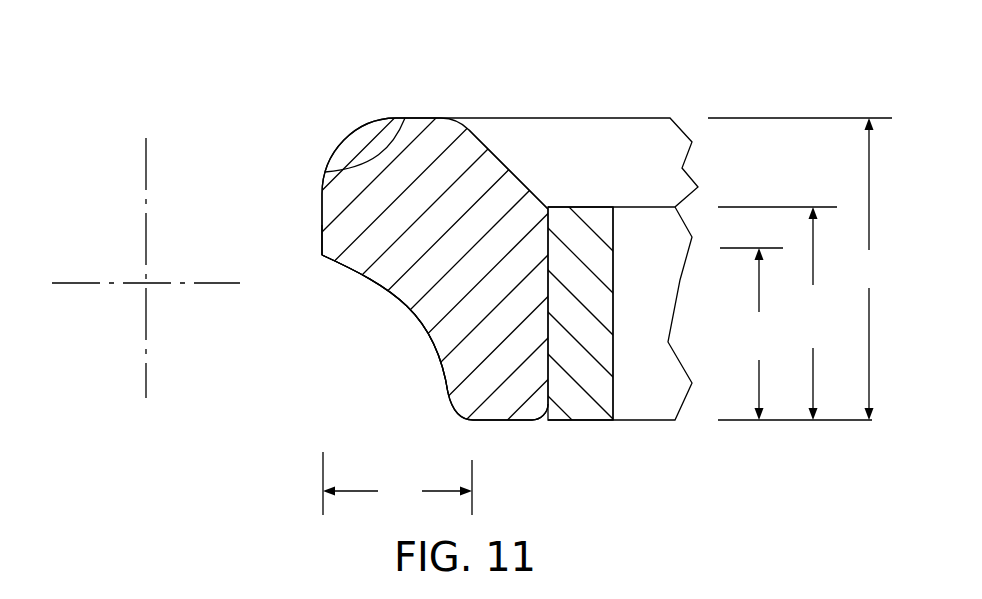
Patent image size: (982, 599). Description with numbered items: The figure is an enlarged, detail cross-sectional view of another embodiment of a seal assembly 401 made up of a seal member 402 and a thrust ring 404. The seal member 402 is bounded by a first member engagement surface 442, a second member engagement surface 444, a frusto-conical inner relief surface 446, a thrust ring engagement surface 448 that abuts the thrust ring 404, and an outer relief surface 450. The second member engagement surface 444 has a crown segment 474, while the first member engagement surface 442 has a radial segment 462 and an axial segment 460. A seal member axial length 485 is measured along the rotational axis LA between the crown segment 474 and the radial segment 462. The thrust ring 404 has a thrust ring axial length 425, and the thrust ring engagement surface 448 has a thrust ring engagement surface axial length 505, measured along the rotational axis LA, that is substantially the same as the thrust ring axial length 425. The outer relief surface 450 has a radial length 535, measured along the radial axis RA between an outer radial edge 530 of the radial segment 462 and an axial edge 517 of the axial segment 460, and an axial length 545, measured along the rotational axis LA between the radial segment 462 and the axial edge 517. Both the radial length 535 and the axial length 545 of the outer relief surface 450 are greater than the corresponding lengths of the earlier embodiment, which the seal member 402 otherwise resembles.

The seal assembly 401 is at (497, 268).
The seal member 402 is at (338, 231).
The thrust ring 404 is at (567, 279).
The first member engagement surface 442 is at (312, 211).
The second member engagement surface 444 is at (351, 126).
The frusto-conical inner relief surface 446 is at (515, 161).
The thrust ring engagement surface 448 is at (558, 300).
The outer relief surface 450 is at (403, 317).
The axial segment 460 is at (326, 237).
The radial segment 462 is at (517, 422).
The crown segment 474 is at (342, 166).
The seal member axial length 485 is at (800, 269).
The thrust ring axial length 425 is at (781, 313).
The thrust ring engagement surface axial length 505 is at (778, 313).
The axial length 545 is at (751, 334).
The radial length 535 is at (397, 483).
The axial edge 517 is at (322, 256).
The outer radial edge 530 is at (475, 422).
The rotational axis LA is at (146, 155).
The radial axis RA is at (85, 283).